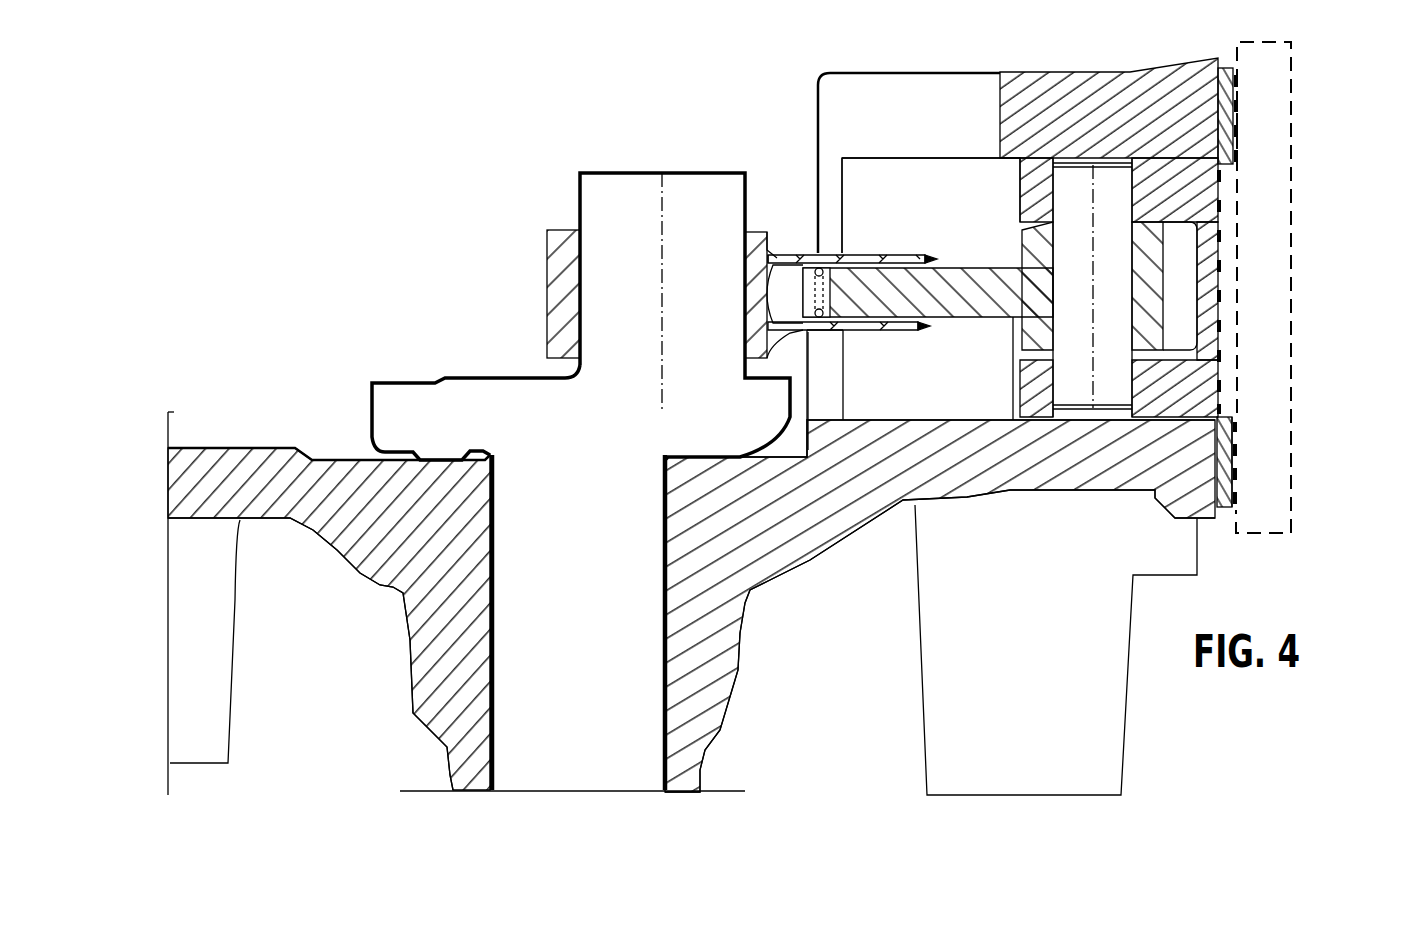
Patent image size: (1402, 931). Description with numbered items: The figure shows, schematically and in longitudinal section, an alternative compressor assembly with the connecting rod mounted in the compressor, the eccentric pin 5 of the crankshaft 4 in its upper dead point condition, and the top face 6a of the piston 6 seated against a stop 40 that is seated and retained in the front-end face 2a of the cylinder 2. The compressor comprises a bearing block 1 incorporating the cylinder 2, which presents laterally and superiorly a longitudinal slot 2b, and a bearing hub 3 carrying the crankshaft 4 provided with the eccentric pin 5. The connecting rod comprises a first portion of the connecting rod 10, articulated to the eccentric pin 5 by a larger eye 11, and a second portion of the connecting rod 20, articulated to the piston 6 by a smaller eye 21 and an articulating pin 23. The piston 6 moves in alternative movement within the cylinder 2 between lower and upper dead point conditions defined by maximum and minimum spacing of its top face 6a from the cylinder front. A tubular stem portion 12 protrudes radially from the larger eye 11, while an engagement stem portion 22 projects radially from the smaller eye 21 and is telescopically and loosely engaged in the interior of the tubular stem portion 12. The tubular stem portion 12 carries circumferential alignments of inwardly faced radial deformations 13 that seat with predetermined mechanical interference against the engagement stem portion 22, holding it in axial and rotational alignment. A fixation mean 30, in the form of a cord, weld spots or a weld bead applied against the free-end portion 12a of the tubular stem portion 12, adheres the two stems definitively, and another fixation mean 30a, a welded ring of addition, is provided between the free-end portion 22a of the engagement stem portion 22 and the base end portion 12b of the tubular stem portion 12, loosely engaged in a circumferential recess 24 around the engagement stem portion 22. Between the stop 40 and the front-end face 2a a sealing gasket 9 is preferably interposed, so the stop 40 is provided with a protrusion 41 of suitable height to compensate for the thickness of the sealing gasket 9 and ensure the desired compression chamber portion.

The bearing block 1 is at (769, 608).
The cylinder 2 is at (943, 411).
The front-end face 2a is at (1236, 441).
The longitudinal slot 2b is at (918, 116).
The bearing hub 3 is at (660, 577).
The crankshaft 4 is at (595, 684).
The eccentric pin 5 is at (675, 170).
The piston 6 is at (1206, 193).
The top face 6a is at (1222, 278).
The sealing gasket 9 is at (1237, 470).
The first portion of the connecting rod 10 is at (789, 346).
The larger eye 11 is at (585, 268).
The tubular stem portion 12 is at (858, 246).
The free-end portion 12a is at (912, 326).
The base end portion 12b is at (782, 254).
The radial deformations 13 is at (835, 246).
The second portion of the connecting rod 20 is at (1003, 333).
The smaller eye 21 is at (1060, 297).
The engagement stem portion 22 is at (996, 248).
The free-end portion 22a is at (793, 285).
The articulating pin 23 is at (1118, 375).
The circumferential recess 24 is at (784, 252).
The fixation mean 30 is at (908, 260).
The fixation mean 30a is at (803, 303).
The stop 40 is at (1295, 142).
The protrusion 41 is at (1183, 153).